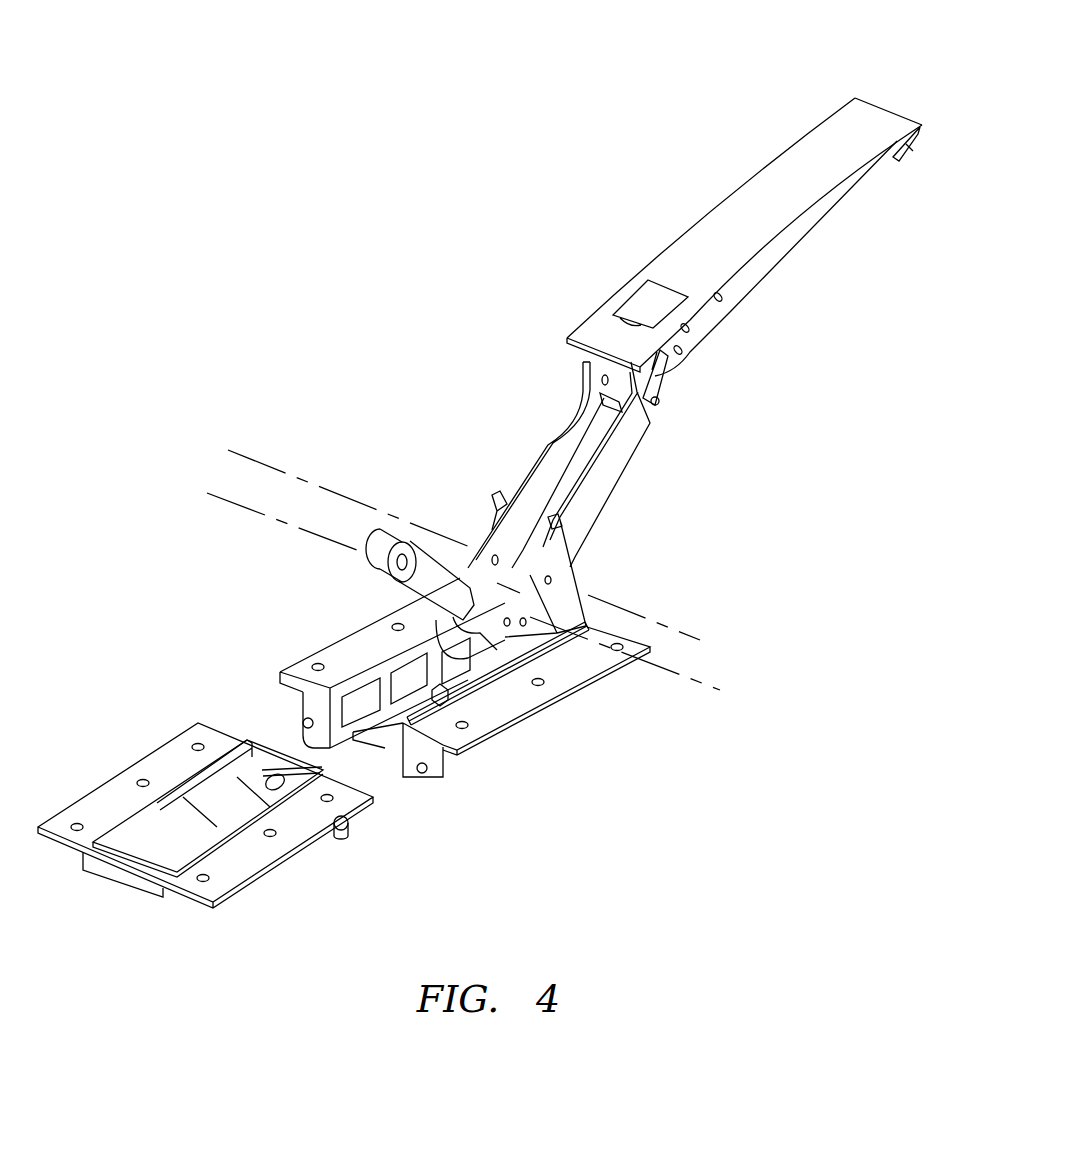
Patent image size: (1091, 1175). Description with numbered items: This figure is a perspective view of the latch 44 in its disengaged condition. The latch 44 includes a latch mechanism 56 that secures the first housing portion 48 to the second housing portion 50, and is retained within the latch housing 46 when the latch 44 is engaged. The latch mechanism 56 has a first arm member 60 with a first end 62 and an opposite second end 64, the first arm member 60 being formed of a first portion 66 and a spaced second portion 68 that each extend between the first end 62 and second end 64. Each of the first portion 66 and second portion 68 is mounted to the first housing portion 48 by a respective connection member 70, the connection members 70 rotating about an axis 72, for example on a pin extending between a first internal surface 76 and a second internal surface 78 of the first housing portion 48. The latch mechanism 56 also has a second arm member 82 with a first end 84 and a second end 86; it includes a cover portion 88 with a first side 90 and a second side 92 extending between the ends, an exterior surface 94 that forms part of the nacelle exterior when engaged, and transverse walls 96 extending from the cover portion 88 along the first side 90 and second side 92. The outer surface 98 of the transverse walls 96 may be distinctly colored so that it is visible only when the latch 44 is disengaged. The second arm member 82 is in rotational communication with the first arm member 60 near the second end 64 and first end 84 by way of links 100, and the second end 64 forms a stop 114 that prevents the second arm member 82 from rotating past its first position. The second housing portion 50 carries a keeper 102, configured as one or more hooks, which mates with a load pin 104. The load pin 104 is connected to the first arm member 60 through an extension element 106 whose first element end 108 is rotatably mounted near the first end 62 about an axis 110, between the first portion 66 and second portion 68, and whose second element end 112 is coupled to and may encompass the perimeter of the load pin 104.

The latch 44 is at (305, 316).
The latch housing 46 is at (738, 772).
The first housing portion 48 is at (608, 670).
The second housing portion 50 is at (250, 880).
The latch mechanism 56 is at (414, 395).
The first arm member 60 is at (635, 502).
The first end 62 is at (565, 640).
The second end 64 is at (698, 385).
The first portion 66 is at (586, 521).
The second portion 68 is at (537, 457).
The connection member 70 is at (493, 503).
The axis 72 is at (243, 452).
The first internal surface 76 is at (384, 735).
The second internal surface 78 is at (302, 703).
The second arm member 82 is at (803, 230).
The first end 84 is at (552, 320).
The second end 86 is at (905, 93).
The cover portion 88 is at (793, 168).
The first side 90 is at (862, 190).
The second side 92 is at (700, 217).
The exterior surface 94 is at (860, 128).
The transverse walls 96 is at (750, 280).
The outer surface 98 is at (717, 313).
The links 100 is at (660, 398).
The keeper 102 is at (297, 785).
The load pin 104 is at (410, 575).
The extension element 106 is at (440, 585).
The first element end 108 is at (515, 668).
The axis 110 is at (718, 692).
The second element end 112 is at (365, 556).
The stop 114 is at (568, 362).